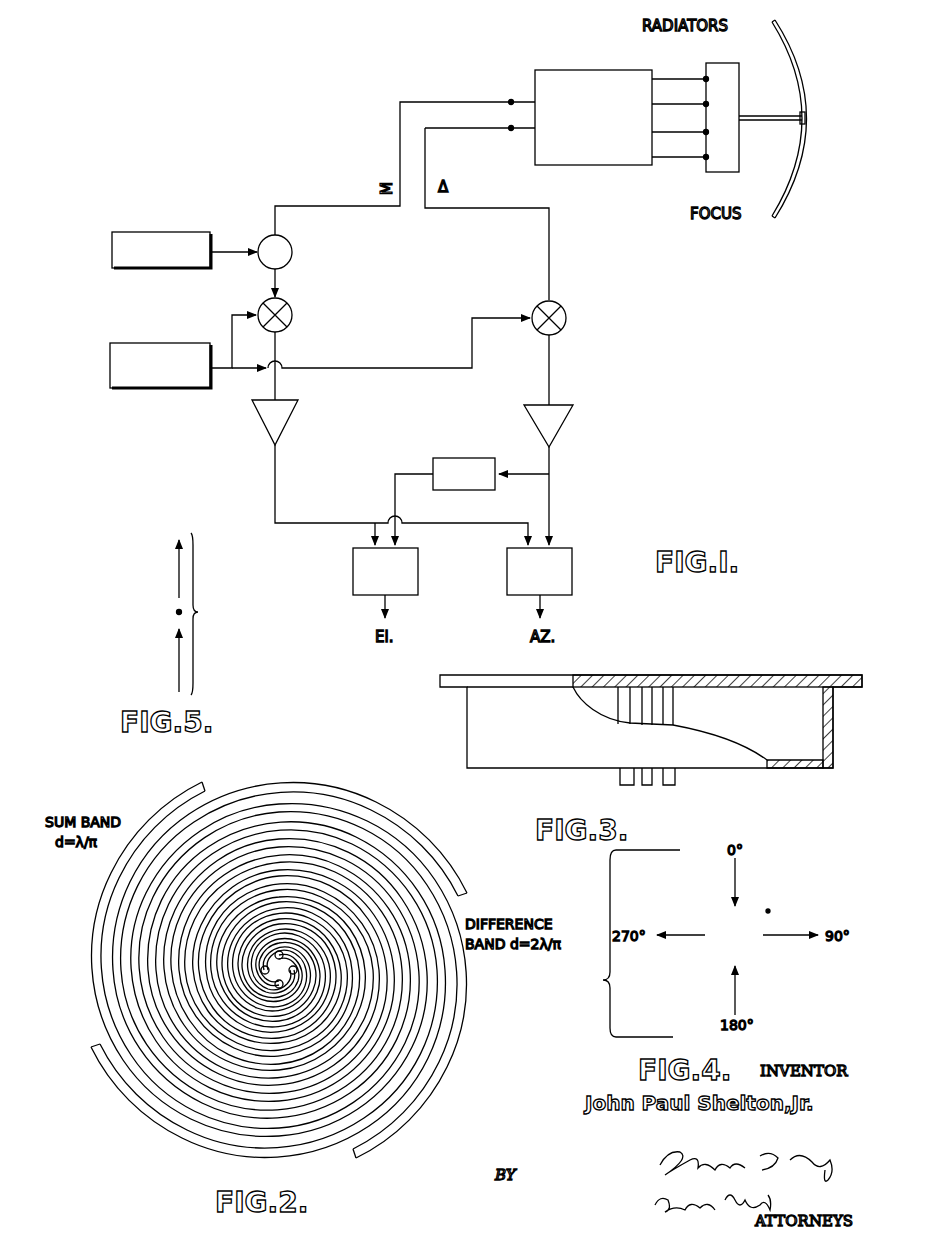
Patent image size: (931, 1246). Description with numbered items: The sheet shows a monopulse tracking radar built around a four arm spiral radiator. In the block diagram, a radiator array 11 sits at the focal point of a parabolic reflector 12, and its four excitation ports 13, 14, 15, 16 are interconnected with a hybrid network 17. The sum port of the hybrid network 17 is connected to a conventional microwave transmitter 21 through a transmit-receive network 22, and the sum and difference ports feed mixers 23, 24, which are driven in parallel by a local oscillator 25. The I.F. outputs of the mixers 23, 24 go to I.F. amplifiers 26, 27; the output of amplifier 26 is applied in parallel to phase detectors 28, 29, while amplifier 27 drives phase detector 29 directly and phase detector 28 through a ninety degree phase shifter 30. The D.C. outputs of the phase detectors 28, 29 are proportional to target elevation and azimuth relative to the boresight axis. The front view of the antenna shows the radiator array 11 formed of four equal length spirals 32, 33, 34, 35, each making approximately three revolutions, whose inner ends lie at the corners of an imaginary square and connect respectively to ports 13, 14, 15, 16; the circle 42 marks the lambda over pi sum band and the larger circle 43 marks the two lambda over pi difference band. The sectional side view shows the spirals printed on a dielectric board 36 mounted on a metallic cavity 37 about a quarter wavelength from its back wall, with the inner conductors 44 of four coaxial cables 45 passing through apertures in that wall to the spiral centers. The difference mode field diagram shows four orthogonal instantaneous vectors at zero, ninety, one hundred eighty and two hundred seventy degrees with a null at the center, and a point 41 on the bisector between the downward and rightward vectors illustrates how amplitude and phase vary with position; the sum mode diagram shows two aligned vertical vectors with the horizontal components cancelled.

In FIG. 1, the radiator array 11 is at (716, 64).
In FIG. 1, the parabolic reflector 12 is at (797, 182).
In FIG. 1, the excitation port 13 is at (705, 78).
In FIG. 2, the excitation port 13 is at (261, 969).
In FIG. 1, the excitation port 14 is at (705, 103).
In FIG. 2, the excitation port 14 is at (279, 951).
In FIG. 1, the excitation port 15 is at (705, 131).
In FIG. 2, the excitation port 15 is at (297, 971).
In FIG. 1, the excitation port 16 is at (705, 156).
In FIG. 2, the excitation port 16 is at (279, 988).
In FIG. 1, the hybrid network 17 is at (573, 165).
In FIG. 1, the microwave transmitter 21 is at (150, 232).
In FIG. 1, the transmit-receive (TR) network 22 is at (291, 259).
In FIG. 1, the mixer 23 is at (292, 315).
In FIG. 1, the mixer 24 is at (566, 318).
In FIG. 1, the local oscillator 25 is at (180, 392).
In FIG. 1, the I.F. amplifier 26 is at (286, 425).
In FIG. 1, the I.F. amplifier 27 is at (560, 427).
In FIG. 1, the phase detector 28 is at (353, 576).
In FIG. 1, the phase detector 29 is at (507, 577).
In FIG. 1, the 90 degree phase shifter 30 is at (460, 458).
In FIG. 2, the spiral 32 is at (157, 818).
In FIG. 2, the spiral 33 is at (363, 803).
In FIG. 2, the spiral 34 is at (415, 1117).
In FIG. 2, the spiral 35 is at (138, 1107).
In FIG. 3, the dielectric board 36 is at (733, 688).
In FIG. 3, the metallic cavity 37 is at (834, 737).
In FIG. 4, the point 41 is at (768, 911).
In FIG. 2, the circle 42 is at (220, 945).
In FIG. 2, the circle 43 is at (418, 958).
In FIG. 3, the inner conductors 44 is at (660, 713).
In FIG. 3, the coaxial cables 45 is at (670, 783).